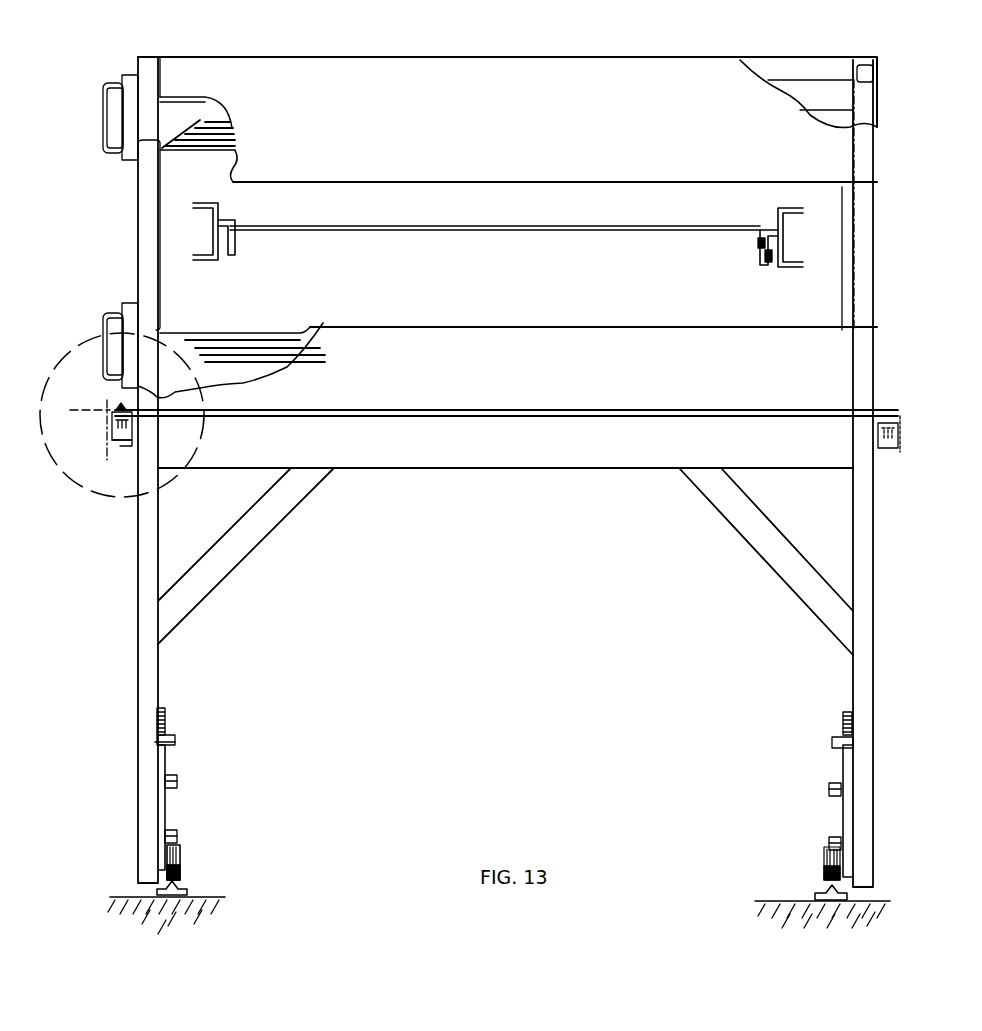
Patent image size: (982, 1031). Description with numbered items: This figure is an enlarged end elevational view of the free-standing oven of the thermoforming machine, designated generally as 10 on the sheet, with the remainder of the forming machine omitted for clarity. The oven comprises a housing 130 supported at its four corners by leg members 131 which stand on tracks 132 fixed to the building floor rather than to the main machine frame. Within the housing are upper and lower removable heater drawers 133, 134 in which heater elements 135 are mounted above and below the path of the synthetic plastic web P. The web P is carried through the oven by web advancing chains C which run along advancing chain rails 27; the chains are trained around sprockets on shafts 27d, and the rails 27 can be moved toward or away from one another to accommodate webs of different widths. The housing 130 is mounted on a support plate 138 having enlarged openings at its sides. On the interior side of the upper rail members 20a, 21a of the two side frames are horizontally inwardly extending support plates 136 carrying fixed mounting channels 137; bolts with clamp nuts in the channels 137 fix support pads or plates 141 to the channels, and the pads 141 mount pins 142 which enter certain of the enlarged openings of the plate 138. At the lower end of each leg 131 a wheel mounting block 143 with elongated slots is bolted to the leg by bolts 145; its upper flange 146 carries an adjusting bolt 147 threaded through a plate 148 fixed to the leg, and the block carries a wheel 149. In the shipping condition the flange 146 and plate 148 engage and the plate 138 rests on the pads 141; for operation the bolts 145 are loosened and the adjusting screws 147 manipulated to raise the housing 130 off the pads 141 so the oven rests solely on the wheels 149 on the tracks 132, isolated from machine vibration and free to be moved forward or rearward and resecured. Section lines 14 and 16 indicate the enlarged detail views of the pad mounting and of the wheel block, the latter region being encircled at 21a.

The apparatus 10 is at (165, 48).
The oven housing 130 is at (435, 57).
The leg members 131 is at (160, 473).
The tracks 132 is at (188, 892).
The upper heater drawer 133 is at (125, 160).
The lower heater drawer 134 is at (125, 303).
The heater elements 135 is at (192, 152).
The support plates 136 is at (124, 446).
The mounting channels 137 is at (112, 432).
The support plate 138 is at (232, 418).
The support pads 141 is at (114, 424).
The pins 142 is at (121, 408).
The wheel mounting block 143 is at (165, 802).
The bolts 145 is at (171, 778).
The flange 146 is at (176, 745).
The adjusting bolt 147 is at (167, 708).
The plate 148 is at (178, 738).
The wheels 149 is at (180, 852).
The advancing chain rails 27 is at (212, 215).
The shafts 27d is at (770, 260).
The web advancing chains C is at (760, 250).
The plastic web P is at (400, 228).
The section line 14 is at (125, 333).
The section line 16 is at (190, 915).
The upper rail member 20a is at (925, 412).
The upper rail member 21a is at (96, 336).